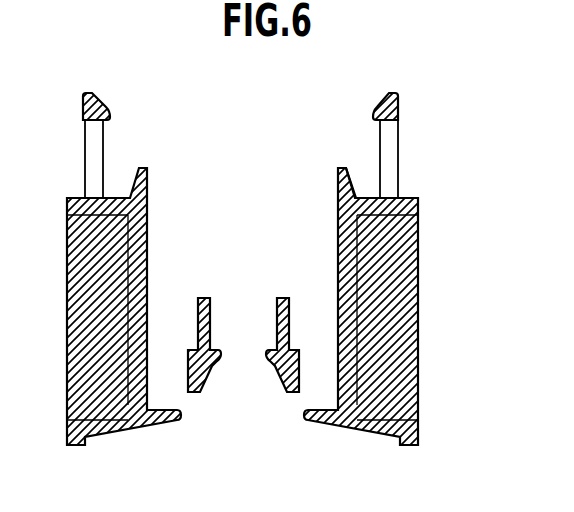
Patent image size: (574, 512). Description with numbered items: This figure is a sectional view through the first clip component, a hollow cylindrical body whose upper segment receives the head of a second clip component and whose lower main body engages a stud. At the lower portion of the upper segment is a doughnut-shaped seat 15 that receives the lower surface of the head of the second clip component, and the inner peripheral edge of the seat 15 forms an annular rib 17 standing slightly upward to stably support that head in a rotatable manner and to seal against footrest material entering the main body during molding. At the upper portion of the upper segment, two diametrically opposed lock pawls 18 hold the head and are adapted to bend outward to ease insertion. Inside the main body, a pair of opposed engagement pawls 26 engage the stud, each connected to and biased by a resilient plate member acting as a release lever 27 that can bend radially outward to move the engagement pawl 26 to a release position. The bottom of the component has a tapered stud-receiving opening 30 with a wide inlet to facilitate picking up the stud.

The seat 15 is at (368, 197).
The annular rib 17 is at (338, 167).
The lock pawl 18 is at (110, 112).
The engagement pawl 26 is at (270, 356).
The release lever 27 is at (283, 298).
The stud-receiving opening 30 is at (262, 392).